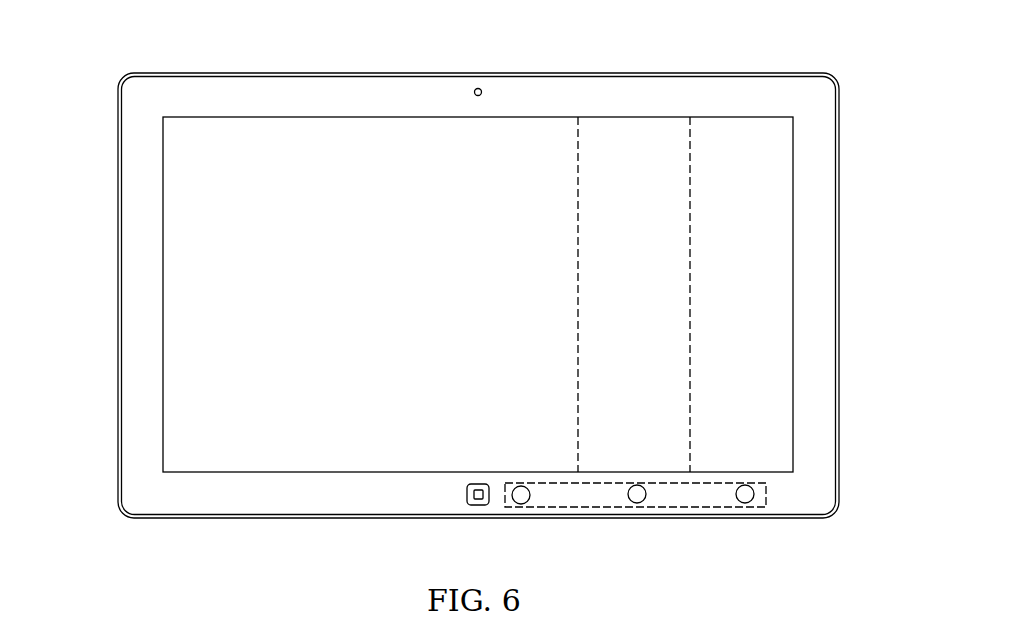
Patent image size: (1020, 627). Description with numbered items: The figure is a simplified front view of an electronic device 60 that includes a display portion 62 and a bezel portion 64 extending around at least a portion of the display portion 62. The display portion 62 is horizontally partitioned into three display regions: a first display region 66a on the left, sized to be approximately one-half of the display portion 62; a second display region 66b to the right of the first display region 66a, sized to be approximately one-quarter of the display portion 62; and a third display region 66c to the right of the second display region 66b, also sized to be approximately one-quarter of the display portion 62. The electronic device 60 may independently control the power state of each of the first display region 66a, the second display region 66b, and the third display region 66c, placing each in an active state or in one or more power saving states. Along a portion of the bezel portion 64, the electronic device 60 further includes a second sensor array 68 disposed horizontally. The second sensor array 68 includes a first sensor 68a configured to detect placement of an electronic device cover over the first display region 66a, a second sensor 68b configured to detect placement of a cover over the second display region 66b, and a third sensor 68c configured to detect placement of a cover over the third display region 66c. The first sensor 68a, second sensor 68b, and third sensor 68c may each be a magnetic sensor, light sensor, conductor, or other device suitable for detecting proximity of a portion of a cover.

The electronic device 60 is at (340, 69).
The display portion 62 is at (180, 146).
The bezel portion 64 is at (126, 178).
The first display region 66a is at (180, 444).
The second display region 66b is at (656, 130).
The third display region 66c is at (777, 210).
The second sensor array 68 is at (766, 492).
The first sensor 68a is at (527, 502).
The second sensor 68b is at (643, 501).
The third sensor 68c is at (740, 502).